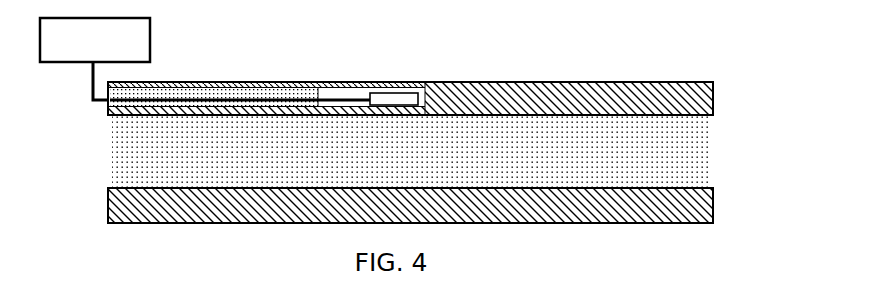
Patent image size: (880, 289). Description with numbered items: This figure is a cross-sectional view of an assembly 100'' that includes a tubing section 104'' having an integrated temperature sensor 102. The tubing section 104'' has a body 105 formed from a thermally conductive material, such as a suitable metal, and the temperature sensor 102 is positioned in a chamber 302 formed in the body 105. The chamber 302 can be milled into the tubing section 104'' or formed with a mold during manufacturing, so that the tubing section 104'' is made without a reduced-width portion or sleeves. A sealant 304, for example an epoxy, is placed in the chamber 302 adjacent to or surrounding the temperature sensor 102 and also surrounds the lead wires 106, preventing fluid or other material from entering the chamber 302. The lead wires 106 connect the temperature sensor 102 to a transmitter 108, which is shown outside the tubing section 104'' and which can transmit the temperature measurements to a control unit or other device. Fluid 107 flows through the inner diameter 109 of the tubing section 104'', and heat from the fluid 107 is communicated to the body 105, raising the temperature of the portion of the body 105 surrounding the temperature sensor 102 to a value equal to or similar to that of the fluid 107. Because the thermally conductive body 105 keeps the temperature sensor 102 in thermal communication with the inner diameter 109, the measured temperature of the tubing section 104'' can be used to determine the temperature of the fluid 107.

The assembly 100'' is at (547, 40).
The transmitter 108 is at (84, 58).
The lead wires 106 is at (84, 89).
The body 105 is at (586, 87).
The sealant 304 is at (221, 91).
The chamber 302 is at (356, 91).
The temperature sensor 102 is at (394, 94).
The tubing section 104'' is at (87, 152).
The inner diameter 109 is at (708, 153).
The fluid 107 is at (698, 172).